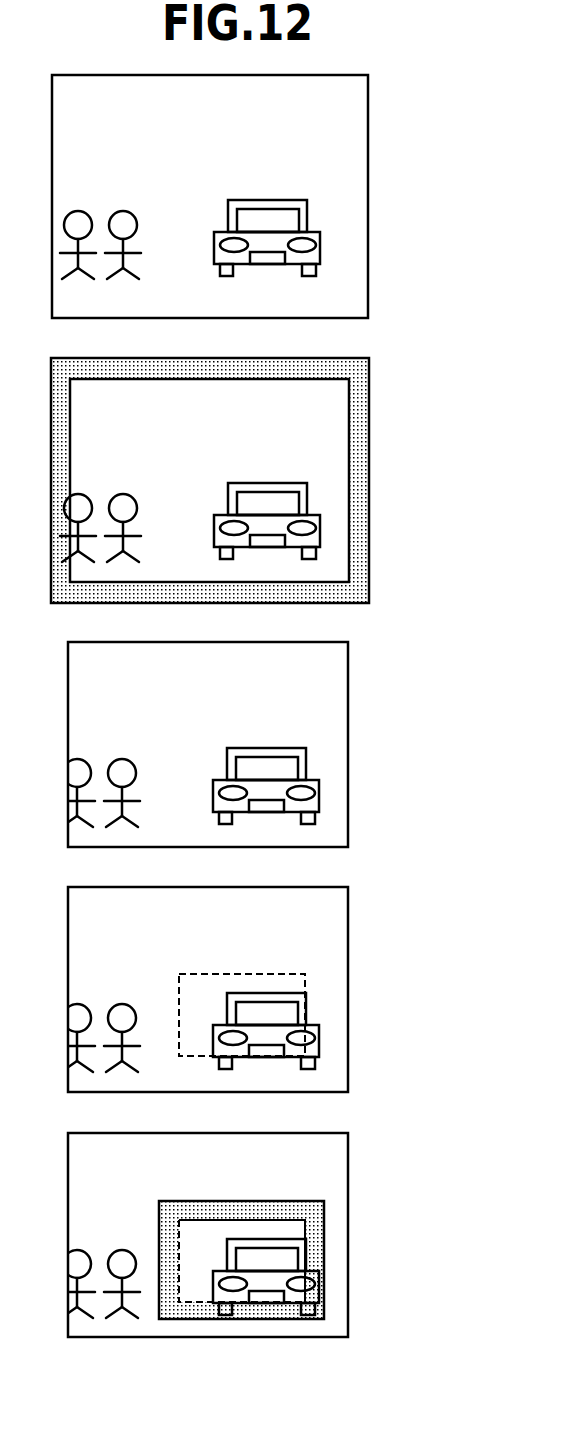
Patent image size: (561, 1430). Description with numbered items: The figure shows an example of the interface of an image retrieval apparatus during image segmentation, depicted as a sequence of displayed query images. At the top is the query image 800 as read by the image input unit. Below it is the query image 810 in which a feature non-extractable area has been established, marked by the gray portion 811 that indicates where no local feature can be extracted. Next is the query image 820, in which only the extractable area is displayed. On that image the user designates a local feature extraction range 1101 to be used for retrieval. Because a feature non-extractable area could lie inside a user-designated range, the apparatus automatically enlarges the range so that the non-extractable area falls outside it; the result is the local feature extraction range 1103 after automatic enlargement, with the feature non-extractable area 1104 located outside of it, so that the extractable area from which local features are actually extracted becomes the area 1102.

The query image 800 is at (368, 110).
The query image 810 is at (251, 478).
The gray portion 811 is at (362, 478).
The query image 820 is at (349, 683).
The local feature extraction range 1101 is at (305, 975).
The extractable area 1102 is at (297, 1231).
The local feature extraction range 1103 is at (327, 1262).
The feature non-extractable area 1104 is at (318, 1306).